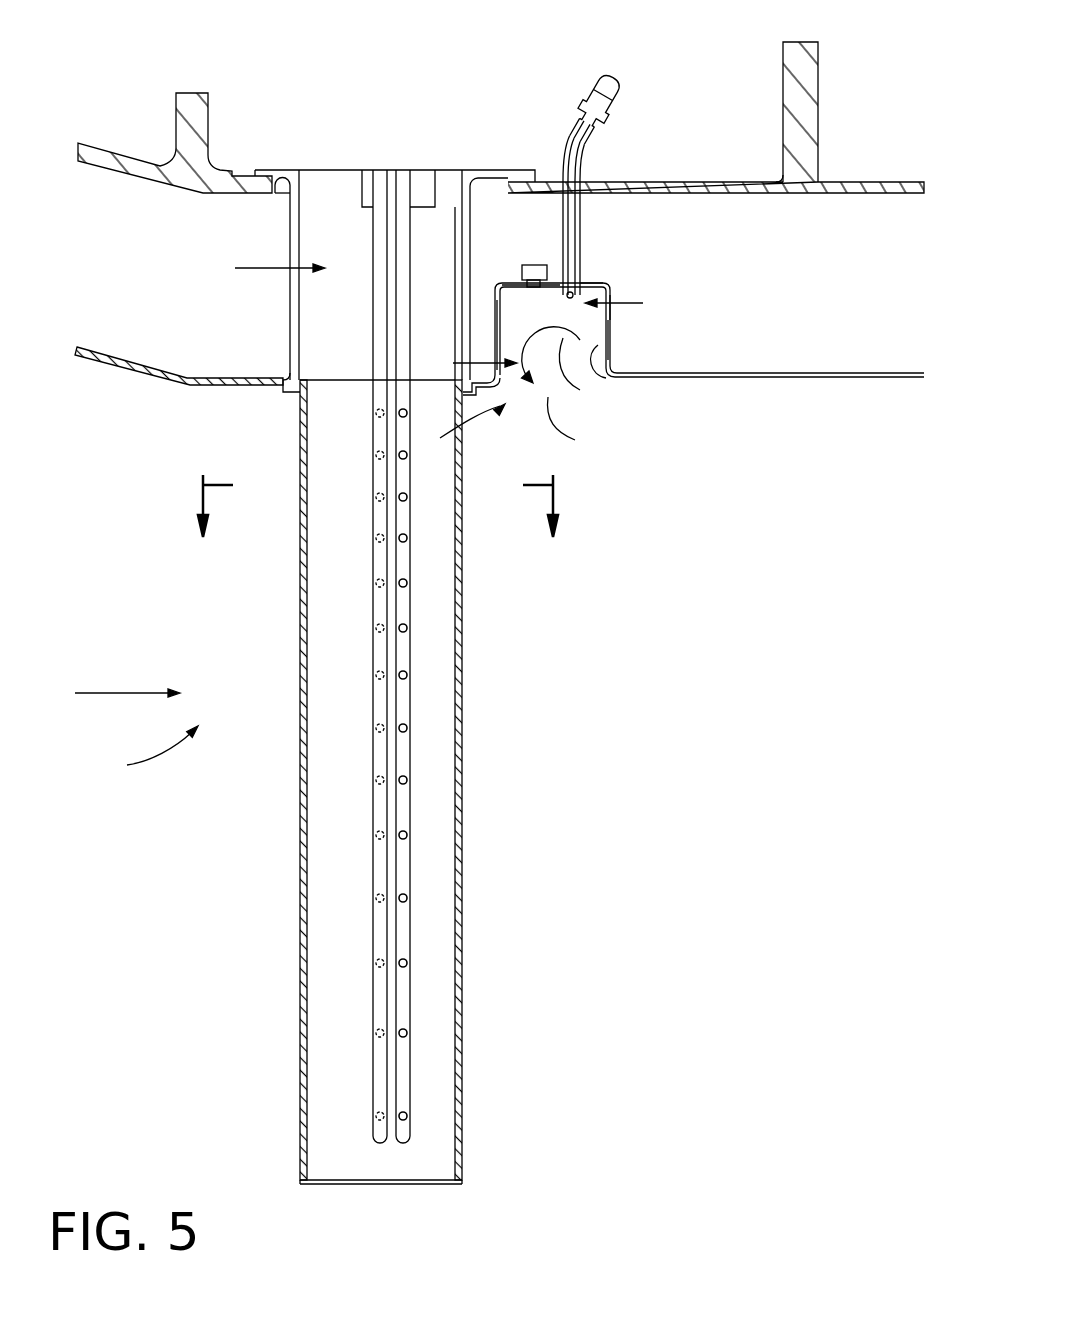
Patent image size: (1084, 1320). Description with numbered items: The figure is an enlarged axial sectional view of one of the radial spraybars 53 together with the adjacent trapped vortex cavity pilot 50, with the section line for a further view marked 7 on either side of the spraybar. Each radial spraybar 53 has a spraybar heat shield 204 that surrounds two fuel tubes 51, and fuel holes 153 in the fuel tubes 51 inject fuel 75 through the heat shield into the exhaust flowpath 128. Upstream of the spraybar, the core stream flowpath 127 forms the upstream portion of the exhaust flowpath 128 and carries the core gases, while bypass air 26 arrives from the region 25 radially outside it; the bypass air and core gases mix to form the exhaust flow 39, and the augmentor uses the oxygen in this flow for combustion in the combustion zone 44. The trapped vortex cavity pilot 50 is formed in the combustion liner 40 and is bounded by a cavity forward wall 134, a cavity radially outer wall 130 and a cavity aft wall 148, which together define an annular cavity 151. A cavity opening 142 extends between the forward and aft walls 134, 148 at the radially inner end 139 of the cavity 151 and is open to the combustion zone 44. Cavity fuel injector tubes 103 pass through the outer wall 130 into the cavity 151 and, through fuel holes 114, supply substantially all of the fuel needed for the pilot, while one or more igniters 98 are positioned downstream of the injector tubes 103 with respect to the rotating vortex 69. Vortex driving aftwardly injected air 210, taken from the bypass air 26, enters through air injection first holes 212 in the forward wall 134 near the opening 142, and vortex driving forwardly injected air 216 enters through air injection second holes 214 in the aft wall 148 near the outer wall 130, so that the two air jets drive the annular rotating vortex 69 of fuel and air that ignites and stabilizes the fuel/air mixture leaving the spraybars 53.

The compressor discharge passage 25 is at (128, 277).
The bypass air 26 is at (250, 268).
The exhaust flow 39 is at (117, 693).
The combustion liner 40 is at (822, 373).
The combustion zone 44 is at (710, 710).
The trapped vortex cavity pilot 50 is at (505, 255).
The fuel tubes 51 is at (412, 468).
The radial spraybars 53 is at (143, 755).
The rotating vortex 69 is at (582, 346).
The fuel 75 is at (455, 420).
The igniters 98 is at (563, 242).
The cavity fuel injector tubes 103 is at (566, 210).
The fuel holes 114 is at (596, 288).
The core stream flowpath 127 is at (158, 499).
The exhaust flowpath 128 is at (636, 895).
The cavity radially outer wall 130 is at (588, 278).
The cavity forward wall 134 is at (493, 348).
The radially inner end 139 is at (602, 368).
The cavity opening 142 is at (555, 398).
The cavity aft wall 148 is at (612, 338).
The annular cavity 151 is at (583, 392).
The fuel holes 153 is at (407, 538).
The spraybar heat shield 204 is at (463, 660).
The vortex driving aftwardly injected air 210 is at (485, 365).
The air injection first holes 212 is at (512, 322).
The air injection second holes 214 is at (622, 304).
The vortex driving forwardly injected air 216 is at (630, 305).
The section line 7- 7 is at (378, 529).